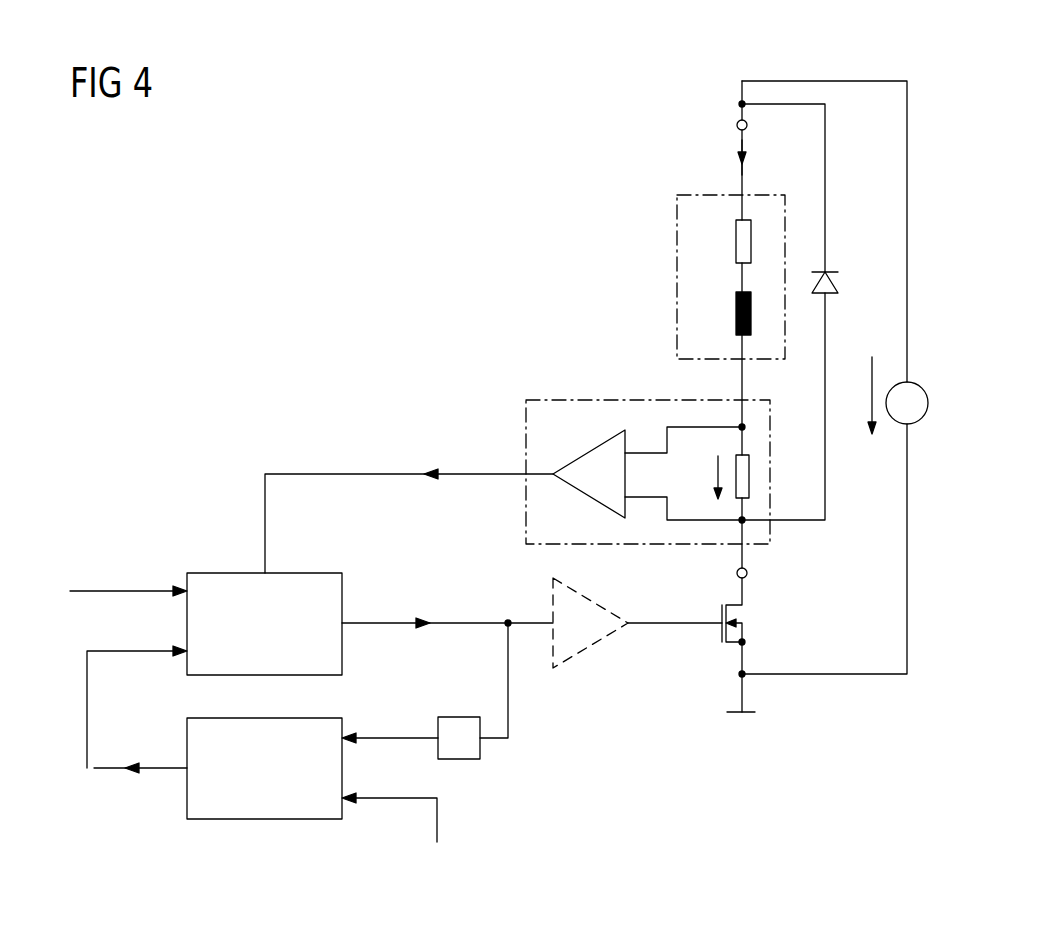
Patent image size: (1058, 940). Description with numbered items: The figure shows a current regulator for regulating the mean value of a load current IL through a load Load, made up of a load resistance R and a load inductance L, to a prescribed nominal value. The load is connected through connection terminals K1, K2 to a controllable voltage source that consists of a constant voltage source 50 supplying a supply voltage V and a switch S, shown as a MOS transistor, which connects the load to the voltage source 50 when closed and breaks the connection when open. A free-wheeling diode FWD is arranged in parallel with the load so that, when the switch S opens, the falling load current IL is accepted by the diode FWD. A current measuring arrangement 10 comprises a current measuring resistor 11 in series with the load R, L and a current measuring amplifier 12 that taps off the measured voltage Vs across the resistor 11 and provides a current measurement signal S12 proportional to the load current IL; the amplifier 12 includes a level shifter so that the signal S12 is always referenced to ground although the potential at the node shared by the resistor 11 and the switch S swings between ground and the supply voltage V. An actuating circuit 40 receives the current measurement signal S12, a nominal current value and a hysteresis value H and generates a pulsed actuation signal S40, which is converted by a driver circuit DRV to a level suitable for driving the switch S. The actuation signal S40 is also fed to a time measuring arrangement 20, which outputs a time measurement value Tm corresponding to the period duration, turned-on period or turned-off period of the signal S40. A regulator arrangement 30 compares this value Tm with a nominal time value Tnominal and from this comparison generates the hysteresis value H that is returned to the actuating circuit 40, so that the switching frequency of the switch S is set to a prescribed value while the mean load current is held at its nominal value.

The current measuring arrangement 10 is at (666, 442).
The current measuring resistor 11 is at (750, 477).
The current measuring amplifier 12 is at (590, 450).
The time measuring arrangement 20 is at (458, 716).
The regulator arrangement 30 is at (262, 822).
The actuating circuit 40 is at (225, 572).
The constant voltage source 50 is at (900, 426).
The connection terminal K1 is at (737, 125).
The connection terminal K2 is at (748, 574).
The load Load is at (686, 277).
The load resistance R is at (735, 241).
The load inductance L is at (735, 315).
The free-wheeling diode FWD is at (826, 270).
The switch S is at (735, 610).
The driver circuit DRV is at (590, 645).
The load current IL is at (738, 160).
The measured voltage Vs is at (704, 477).
The supply voltage V is at (861, 395).
The current measurement signal S12 is at (428, 470).
The actuation signal S40 is at (425, 619).
The time measurement value Tm is at (390, 725).
The nominal time value Tnominal is at (428, 836).
The hysteresis value H is at (140, 765).